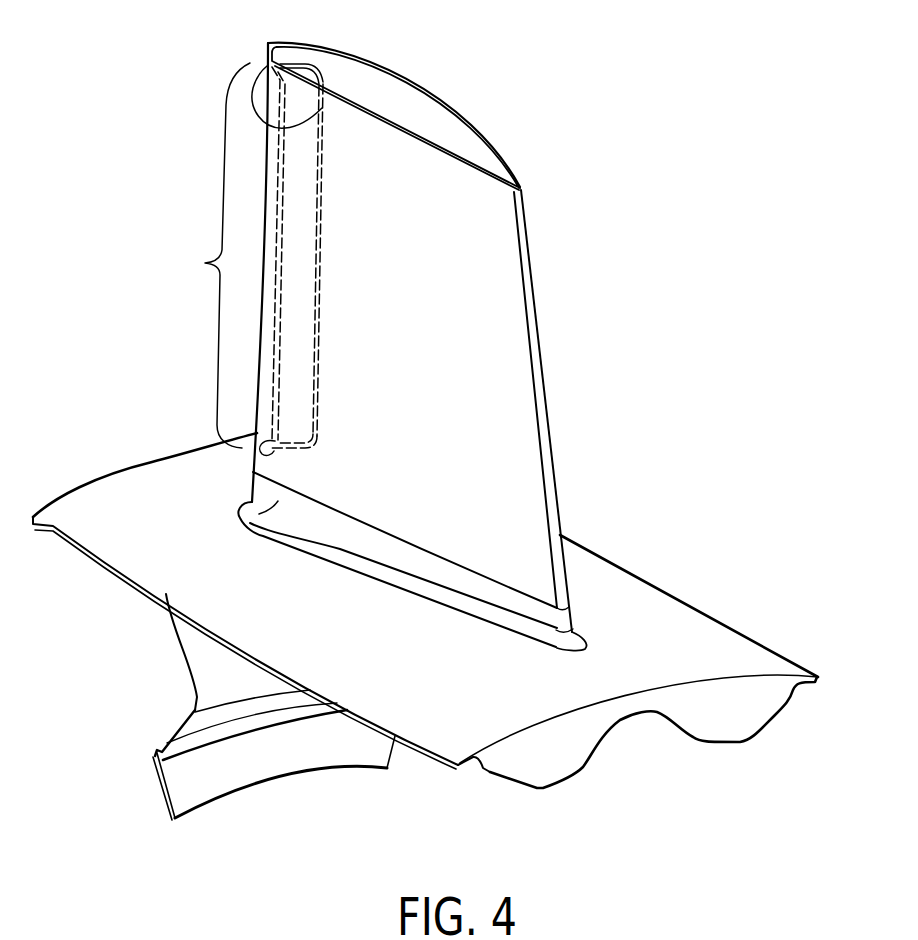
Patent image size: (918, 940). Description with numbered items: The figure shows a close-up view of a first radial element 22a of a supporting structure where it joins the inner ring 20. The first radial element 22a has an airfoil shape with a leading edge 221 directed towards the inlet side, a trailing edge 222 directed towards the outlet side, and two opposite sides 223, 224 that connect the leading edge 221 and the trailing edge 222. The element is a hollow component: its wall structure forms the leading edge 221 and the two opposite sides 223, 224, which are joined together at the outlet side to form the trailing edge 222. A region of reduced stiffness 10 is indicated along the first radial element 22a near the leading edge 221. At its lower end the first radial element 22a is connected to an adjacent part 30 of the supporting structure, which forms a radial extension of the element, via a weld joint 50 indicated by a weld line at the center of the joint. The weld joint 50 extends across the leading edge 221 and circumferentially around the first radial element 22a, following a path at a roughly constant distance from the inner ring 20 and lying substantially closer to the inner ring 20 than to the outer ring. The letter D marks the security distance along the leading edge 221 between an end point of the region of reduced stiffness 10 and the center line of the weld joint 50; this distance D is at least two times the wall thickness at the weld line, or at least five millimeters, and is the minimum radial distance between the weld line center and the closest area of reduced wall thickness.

The region of reduced stiffness 10 is at (205, 263).
The inner ring 20 is at (657, 622).
The first radial element 22a is at (607, 280).
The adjacent part 30 is at (238, 513).
The weld joint 50 is at (318, 503).
The leading edge 221 is at (322, 108).
The trailing edge 222 is at (548, 430).
The first opposite side 223 is at (393, 228).
The second opposite side 224 is at (456, 112).
The security distance D is at (255, 457).